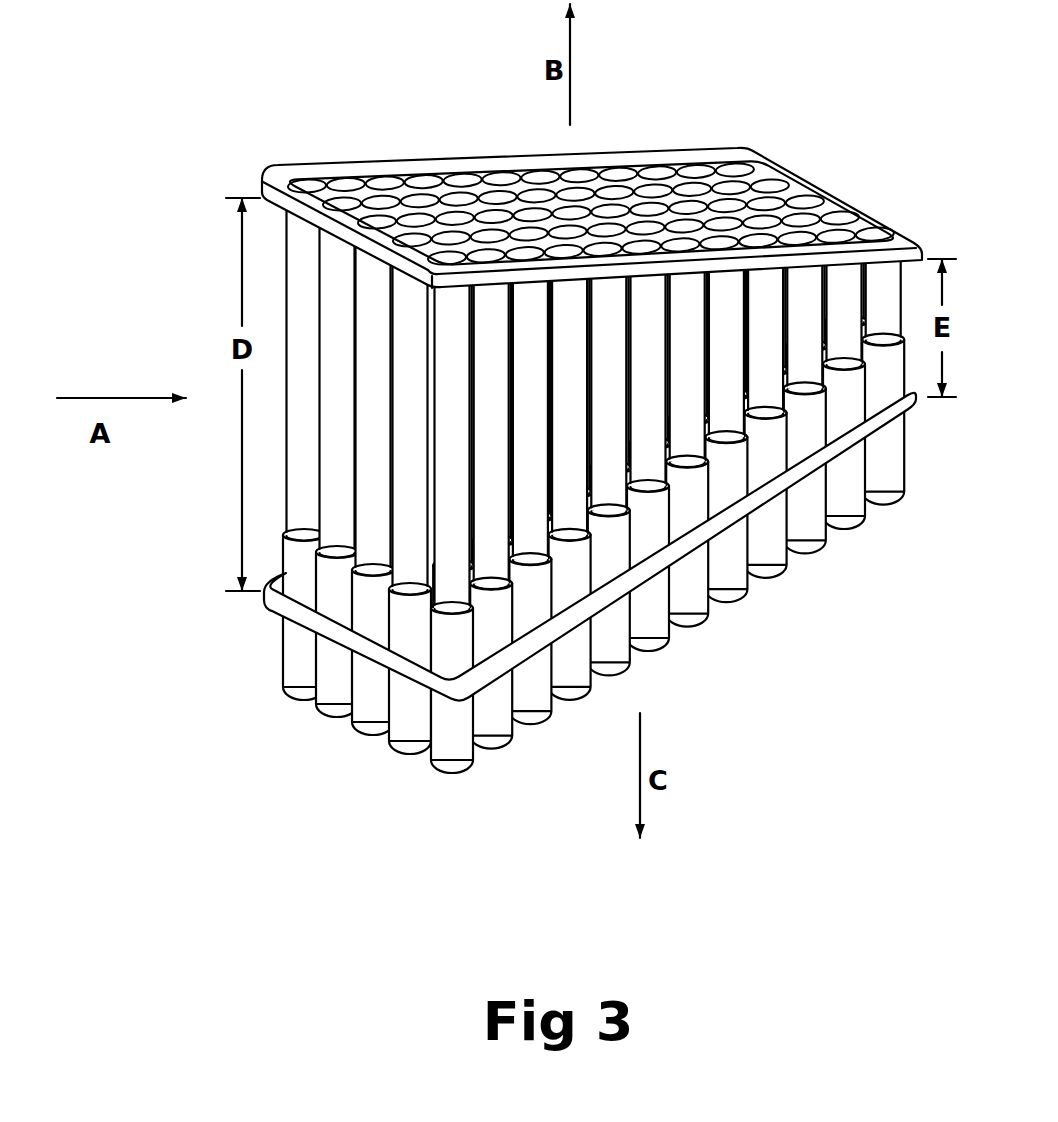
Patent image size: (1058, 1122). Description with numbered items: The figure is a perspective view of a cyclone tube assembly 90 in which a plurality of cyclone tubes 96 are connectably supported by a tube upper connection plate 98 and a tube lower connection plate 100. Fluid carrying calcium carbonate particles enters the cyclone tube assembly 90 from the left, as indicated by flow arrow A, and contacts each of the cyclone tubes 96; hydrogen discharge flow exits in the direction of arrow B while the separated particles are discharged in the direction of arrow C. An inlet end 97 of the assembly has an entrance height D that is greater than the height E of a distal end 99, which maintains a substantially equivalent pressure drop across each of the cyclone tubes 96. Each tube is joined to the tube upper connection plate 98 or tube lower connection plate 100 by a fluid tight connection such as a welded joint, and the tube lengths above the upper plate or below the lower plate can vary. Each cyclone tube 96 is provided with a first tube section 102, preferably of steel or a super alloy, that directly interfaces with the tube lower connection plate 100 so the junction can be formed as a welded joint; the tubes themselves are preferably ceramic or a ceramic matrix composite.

The cyclone tube assembly 90 is at (153, 202).
The cyclone tubes 96 is at (535, 449).
The inlet end 97 is at (372, 608).
The tube upper connection plate 98 is at (595, 192).
The distal end 99 is at (853, 197).
The tube lower connection plate 100 is at (300, 605).
The first tube section 102 is at (447, 738).